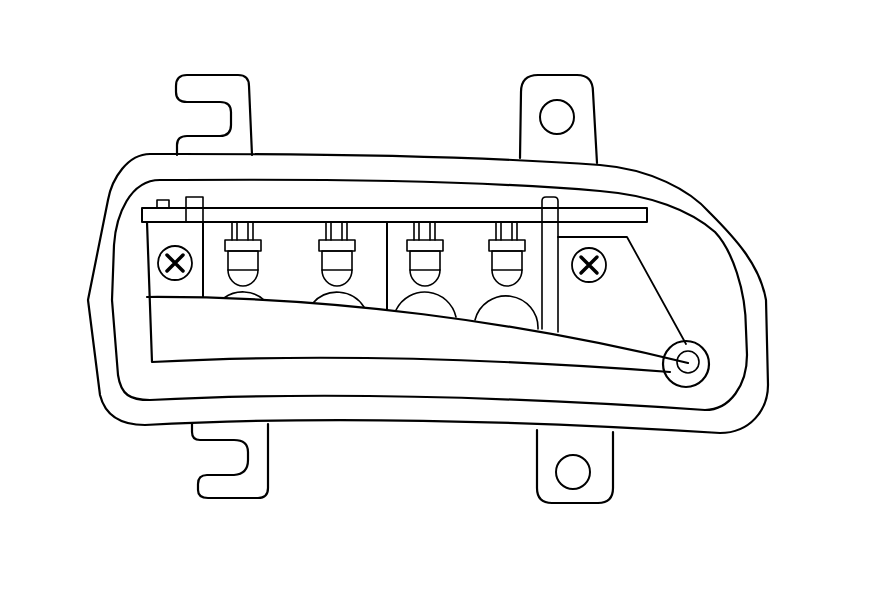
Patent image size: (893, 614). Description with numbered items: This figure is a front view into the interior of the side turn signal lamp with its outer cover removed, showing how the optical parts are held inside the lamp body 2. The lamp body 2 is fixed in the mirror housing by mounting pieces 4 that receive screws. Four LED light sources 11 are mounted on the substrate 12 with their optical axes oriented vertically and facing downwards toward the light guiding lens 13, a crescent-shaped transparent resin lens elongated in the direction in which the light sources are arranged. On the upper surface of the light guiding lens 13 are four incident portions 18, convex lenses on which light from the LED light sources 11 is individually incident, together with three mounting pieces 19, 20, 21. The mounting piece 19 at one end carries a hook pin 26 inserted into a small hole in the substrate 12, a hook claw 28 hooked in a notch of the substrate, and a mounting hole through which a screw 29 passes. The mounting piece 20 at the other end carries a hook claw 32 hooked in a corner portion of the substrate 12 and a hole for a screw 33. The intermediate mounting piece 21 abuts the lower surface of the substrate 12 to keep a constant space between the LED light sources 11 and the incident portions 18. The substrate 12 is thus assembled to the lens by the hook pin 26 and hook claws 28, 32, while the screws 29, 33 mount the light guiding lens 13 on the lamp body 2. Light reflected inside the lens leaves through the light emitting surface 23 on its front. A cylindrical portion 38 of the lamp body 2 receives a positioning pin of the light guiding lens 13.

The lamp body 2 is at (453, 157).
The mounting piece 4 is at (560, 85).
The LED light source 11 is at (255, 262).
The substrate 12 is at (307, 212).
The light guiding lens 13 is at (300, 364).
The incident portion 18 is at (240, 296).
The mounting piece 19 is at (130, 275).
The mounting piece 20 is at (625, 302).
The mounting piece 21 is at (385, 236).
The light emitting surface 23 is at (400, 345).
The hook pin 26 is at (157, 201).
The hook claw 28 is at (190, 197).
The screw 29 is at (158, 260).
The hook claw 32 is at (548, 198).
The screw 33 is at (606, 258).
The cylindrical portion 38 is at (700, 375).